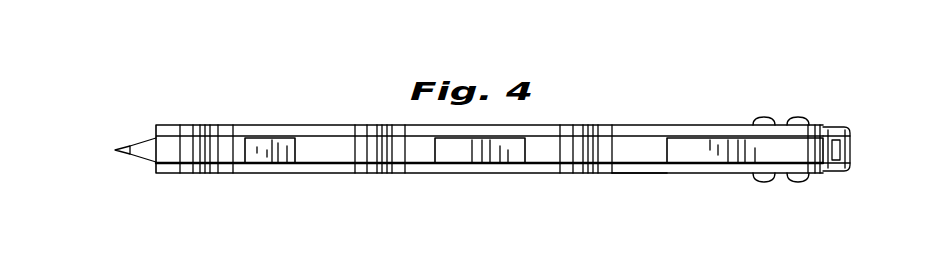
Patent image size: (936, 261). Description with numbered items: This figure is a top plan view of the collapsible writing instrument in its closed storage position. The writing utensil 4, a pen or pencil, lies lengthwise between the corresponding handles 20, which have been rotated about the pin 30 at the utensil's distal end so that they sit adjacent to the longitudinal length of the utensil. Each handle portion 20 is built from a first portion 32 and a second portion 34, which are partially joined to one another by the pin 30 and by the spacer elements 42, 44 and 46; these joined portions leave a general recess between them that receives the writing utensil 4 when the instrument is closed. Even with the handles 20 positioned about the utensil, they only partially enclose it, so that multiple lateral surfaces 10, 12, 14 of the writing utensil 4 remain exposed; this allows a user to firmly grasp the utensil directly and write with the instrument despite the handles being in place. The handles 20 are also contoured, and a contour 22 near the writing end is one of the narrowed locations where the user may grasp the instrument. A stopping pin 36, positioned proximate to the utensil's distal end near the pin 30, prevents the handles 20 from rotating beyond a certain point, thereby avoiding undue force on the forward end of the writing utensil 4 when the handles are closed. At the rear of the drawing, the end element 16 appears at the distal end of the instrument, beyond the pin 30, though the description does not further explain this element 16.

The writing utensil 4 is at (147, 140).
The contour 22 is at (114, 150).
The lateral surface 10 is at (256, 147).
The handle portion 20 is at (330, 125).
The spacer element 46 is at (193, 153).
The spacer element 44 is at (347, 147).
The lateral surface 12 is at (512, 147).
The spacer element 42 is at (623, 150).
The second portion 34 is at (660, 177).
The first portion 32 is at (688, 123).
The lateral surface 14 is at (755, 150).
The stopping pin 36 is at (763, 117).
The pin 30 is at (800, 117).
The end cap 16 is at (752, 193).